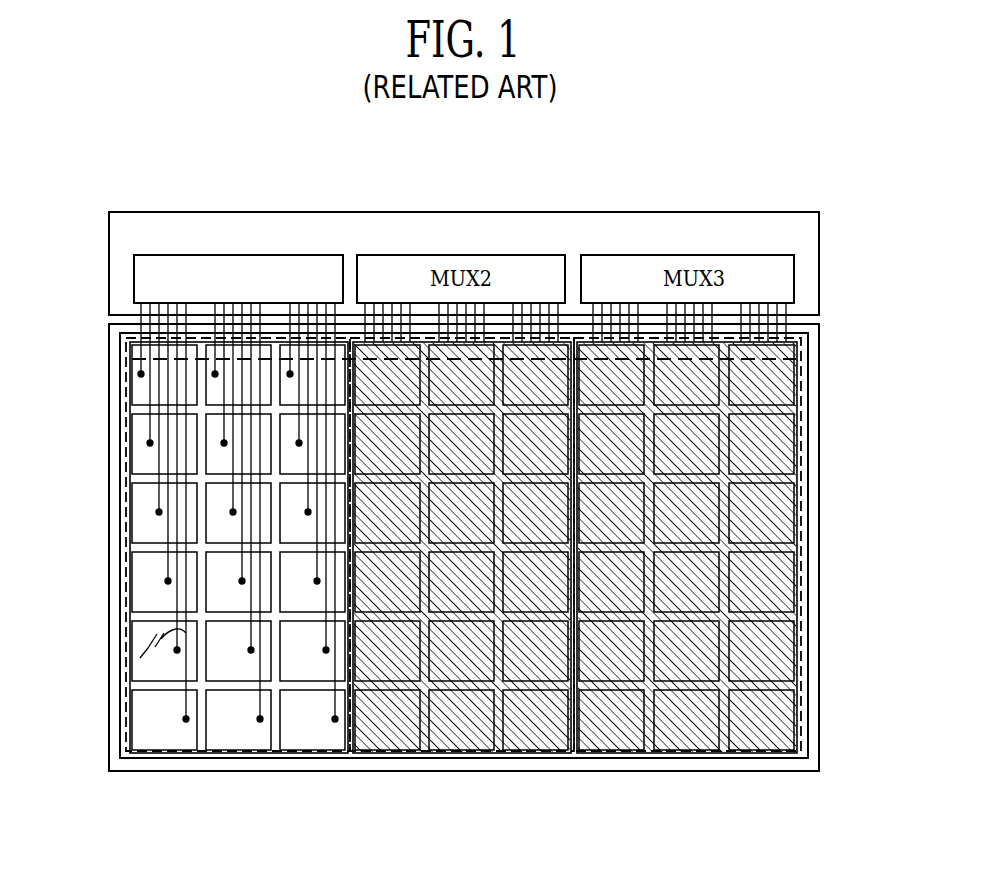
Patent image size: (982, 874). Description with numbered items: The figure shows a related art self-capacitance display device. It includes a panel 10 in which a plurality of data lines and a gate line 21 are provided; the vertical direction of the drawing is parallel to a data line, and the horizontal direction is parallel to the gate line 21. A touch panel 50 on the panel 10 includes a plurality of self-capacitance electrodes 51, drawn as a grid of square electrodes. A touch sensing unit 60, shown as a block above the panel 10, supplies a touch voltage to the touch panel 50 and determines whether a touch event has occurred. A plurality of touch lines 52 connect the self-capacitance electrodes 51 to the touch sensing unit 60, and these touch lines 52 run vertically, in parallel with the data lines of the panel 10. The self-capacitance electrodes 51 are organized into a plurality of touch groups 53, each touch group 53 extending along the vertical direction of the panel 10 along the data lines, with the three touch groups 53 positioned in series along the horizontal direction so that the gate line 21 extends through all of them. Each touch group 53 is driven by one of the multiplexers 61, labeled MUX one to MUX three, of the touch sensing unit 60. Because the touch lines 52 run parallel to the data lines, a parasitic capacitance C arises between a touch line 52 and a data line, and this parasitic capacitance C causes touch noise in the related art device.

The panel 10 is at (820, 373).
The gate line 21 is at (155, 359).
The touch panel 50 is at (808, 440).
The self-capacitance electrode 51 is at (237, 730).
The touch line 52 is at (158, 456).
The touch group 53 is at (327, 755).
The touch sensing unit 60 is at (523, 212).
The multiplexer 61 is at (295, 255).
The parasitic capacitance C is at (163, 654).